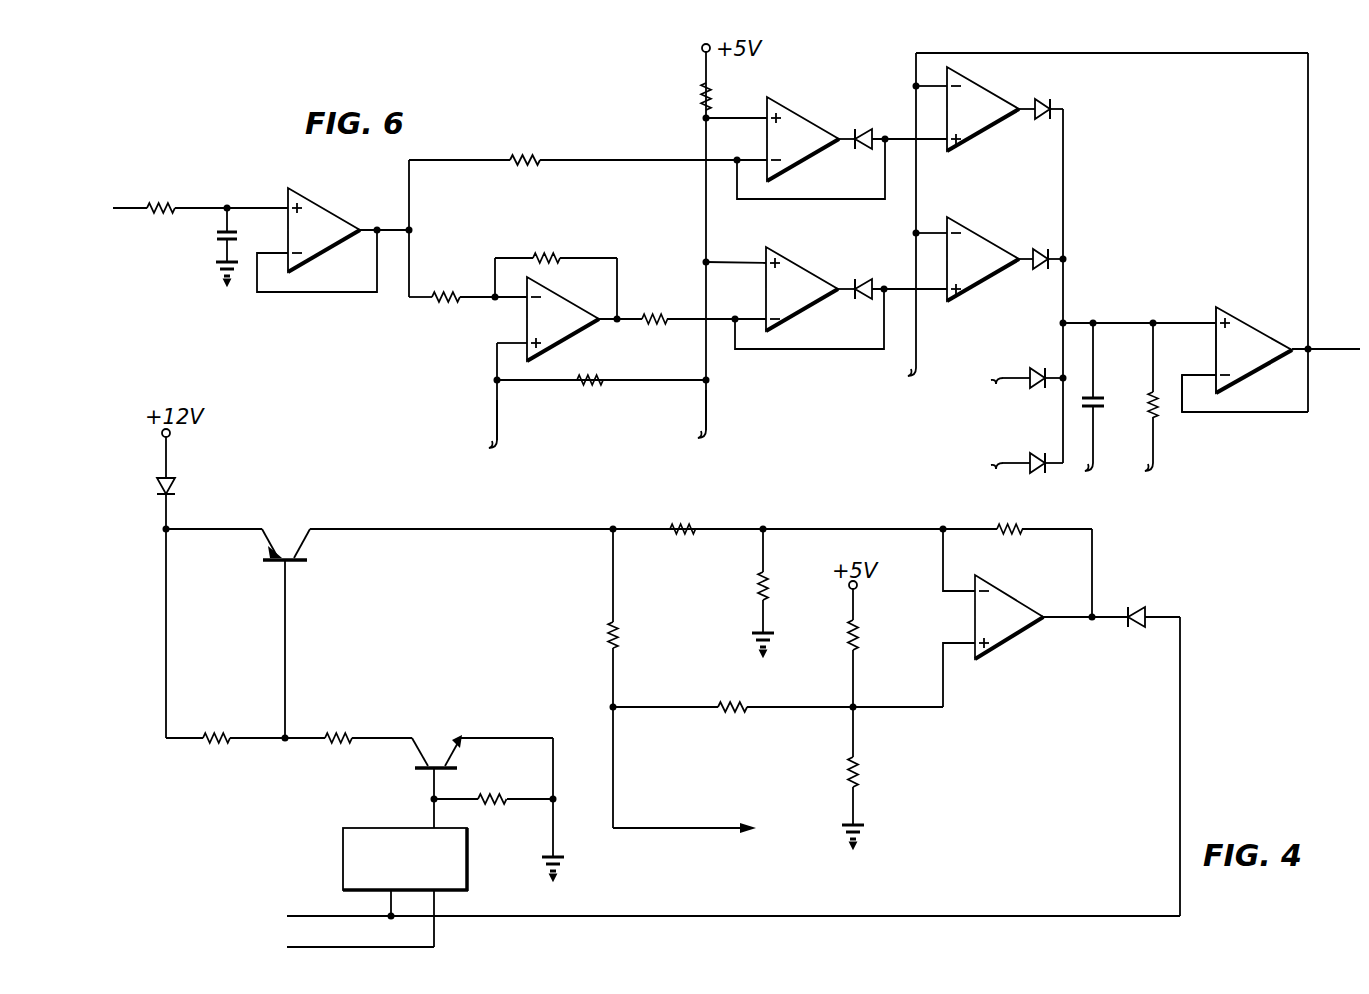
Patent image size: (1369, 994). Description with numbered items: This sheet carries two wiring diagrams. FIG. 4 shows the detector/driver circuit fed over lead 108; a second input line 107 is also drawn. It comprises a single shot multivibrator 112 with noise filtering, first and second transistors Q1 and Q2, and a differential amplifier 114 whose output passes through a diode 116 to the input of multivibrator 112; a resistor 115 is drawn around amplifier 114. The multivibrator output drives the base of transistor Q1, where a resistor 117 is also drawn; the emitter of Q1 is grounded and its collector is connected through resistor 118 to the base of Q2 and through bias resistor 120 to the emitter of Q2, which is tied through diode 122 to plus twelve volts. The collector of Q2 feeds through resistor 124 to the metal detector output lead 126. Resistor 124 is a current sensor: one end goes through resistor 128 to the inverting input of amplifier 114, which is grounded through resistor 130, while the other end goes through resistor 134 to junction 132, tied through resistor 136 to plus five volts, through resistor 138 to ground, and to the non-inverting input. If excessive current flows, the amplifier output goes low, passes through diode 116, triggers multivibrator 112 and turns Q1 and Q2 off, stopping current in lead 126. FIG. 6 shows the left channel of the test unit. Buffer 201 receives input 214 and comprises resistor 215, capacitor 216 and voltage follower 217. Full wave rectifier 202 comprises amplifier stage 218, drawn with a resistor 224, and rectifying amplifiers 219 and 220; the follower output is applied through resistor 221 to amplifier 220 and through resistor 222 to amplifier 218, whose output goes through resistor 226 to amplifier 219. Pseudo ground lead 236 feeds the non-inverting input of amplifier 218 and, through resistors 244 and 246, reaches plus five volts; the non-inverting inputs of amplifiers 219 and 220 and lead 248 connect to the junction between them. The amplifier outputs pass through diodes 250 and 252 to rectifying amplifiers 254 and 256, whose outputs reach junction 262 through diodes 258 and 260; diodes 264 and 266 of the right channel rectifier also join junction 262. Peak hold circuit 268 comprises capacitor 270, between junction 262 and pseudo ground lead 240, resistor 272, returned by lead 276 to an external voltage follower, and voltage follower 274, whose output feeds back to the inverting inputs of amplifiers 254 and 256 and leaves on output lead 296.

In FIG. 6, the buffer 201 is at (226, 177).
In FIG. 6, the full wave rectifier 202 is at (644, 145).
In FIG. 6, the input line 214 is at (132, 206).
In FIG. 6, the resistor 215 is at (159, 203).
In FIG. 6, the capacitor 216 is at (215, 249).
In FIG. 6, the voltage follower 217 is at (328, 217).
In FIG. 6, the amplifier stage 218 is at (576, 330).
In FIG. 6, the rectifying amplifier 219 is at (793, 263).
In FIG. 6, the rectifying amplifier 220 is at (798, 116).
In FIG. 6, the resistor 221 is at (522, 156).
In FIG. 6, the resistor 222 is at (436, 313).
In FIG. 6, the feedback resistor 224 is at (541, 252).
In FIG. 6, the resistor 226 is at (658, 312).
In FIG. 6, the lead 236 is at (496, 414).
In FIG. 6, the lead 240 is at (1094, 440).
In FIG. 6, the resistor 244 is at (600, 386).
In FIG. 6, the resistor 246 is at (703, 94).
In FIG. 6, the lead 248 is at (735, 414).
In FIG. 6, the diode 250 is at (866, 278).
In FIG. 6, the diode 252 is at (862, 152).
In FIG. 6, the rectifying amplifier 254 is at (973, 231).
In FIG. 6, the rectifying amplifier 256 is at (990, 105).
In FIG. 6, the diode 258 is at (1038, 270).
In FIG. 6, the diode 260 is at (1040, 118).
In FIG. 6, the junction 262 is at (1066, 321).
In FIG. 6, the diode 264 is at (1042, 371).
In FIG. 6, the diode 266 is at (1042, 459).
In FIG. 6, the peak hold circuit 268 is at (1190, 280).
In FIG. 6, the capacitor 270 is at (1104, 410).
In FIG. 6, the resistor 272 is at (1150, 396).
In FIG. 6, the voltage follower 274 is at (1243, 324).
In FIG. 6, the lead 276 is at (1154, 447).
In FIG. 6, the output lead 296 is at (1328, 348).
In FIG. 4, the input line 107 is at (300, 943).
In FIG. 4, the lead 108 is at (318, 915).
In FIG. 4, the single shot multivibrator 112 is at (350, 841).
In FIG. 4, the differential amplifier 114 is at (1008, 606).
In FIG. 4, the feedback resistor 115 is at (1014, 535).
In FIG. 4, the diode 116 is at (1134, 607).
In FIG. 4, the resistor 117 is at (494, 795).
In FIG. 4, the resistor 118 is at (350, 730).
In FIG. 4, the bias resistor 120 is at (226, 730).
In FIG. 4, the diode 122 is at (172, 488).
In FIG. 4, the resistor 124 is at (618, 630).
In FIG. 4, the metal detector output lead 126 is at (691, 826).
In FIG. 4, the resistor 128 is at (694, 539).
In FIG. 4, the resistor 130 is at (760, 583).
In FIG. 4, the junction 132 is at (858, 712).
In FIG. 4, the resistor 134 is at (734, 714).
In FIG. 4, the resistor 136 is at (858, 634).
In FIG. 4, the resistor 138 is at (858, 775).
In FIG. 4, the first transistor Q1 is at (419, 776).
In FIG. 4, the second transistor Q2 is at (303, 562).